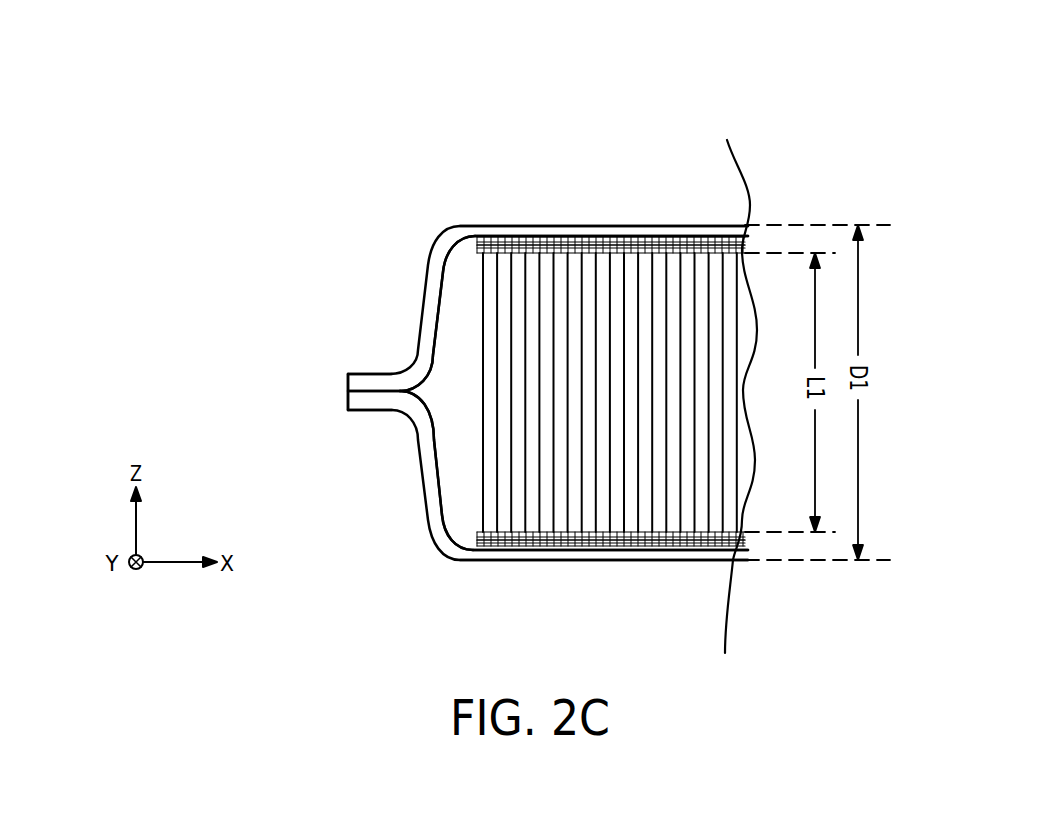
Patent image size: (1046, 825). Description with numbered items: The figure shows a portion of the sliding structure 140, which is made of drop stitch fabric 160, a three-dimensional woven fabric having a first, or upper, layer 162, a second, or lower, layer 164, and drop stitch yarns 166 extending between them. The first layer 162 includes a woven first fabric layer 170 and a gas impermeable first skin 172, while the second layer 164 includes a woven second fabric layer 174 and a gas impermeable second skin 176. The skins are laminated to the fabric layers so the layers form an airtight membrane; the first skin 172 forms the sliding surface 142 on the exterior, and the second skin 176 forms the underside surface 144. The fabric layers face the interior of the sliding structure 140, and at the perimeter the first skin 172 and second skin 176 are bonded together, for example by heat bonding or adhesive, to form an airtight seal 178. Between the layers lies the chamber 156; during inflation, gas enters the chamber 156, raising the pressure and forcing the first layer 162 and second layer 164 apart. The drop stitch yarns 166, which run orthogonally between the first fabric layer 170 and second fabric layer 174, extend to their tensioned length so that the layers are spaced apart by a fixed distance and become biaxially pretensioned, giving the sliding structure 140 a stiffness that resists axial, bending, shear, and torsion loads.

The sliding structure 140 is at (452, 136).
The drop stitch fabric 160 is at (434, 216).
The airtight seal 178 is at (364, 375).
The chamber 156 is at (461, 314).
The sliding surface 142 is at (682, 226).
The underside surface 144 is at (675, 561).
The first layer 162 is at (611, 176).
The first fabric layer 170 is at (547, 245).
The first skin 172 is at (578, 236).
The second layer 164 is at (611, 607).
The second fabric layer 174 is at (560, 540).
The second skin 176 is at (602, 551).
The drop stitch yarns 166 is at (483, 478).